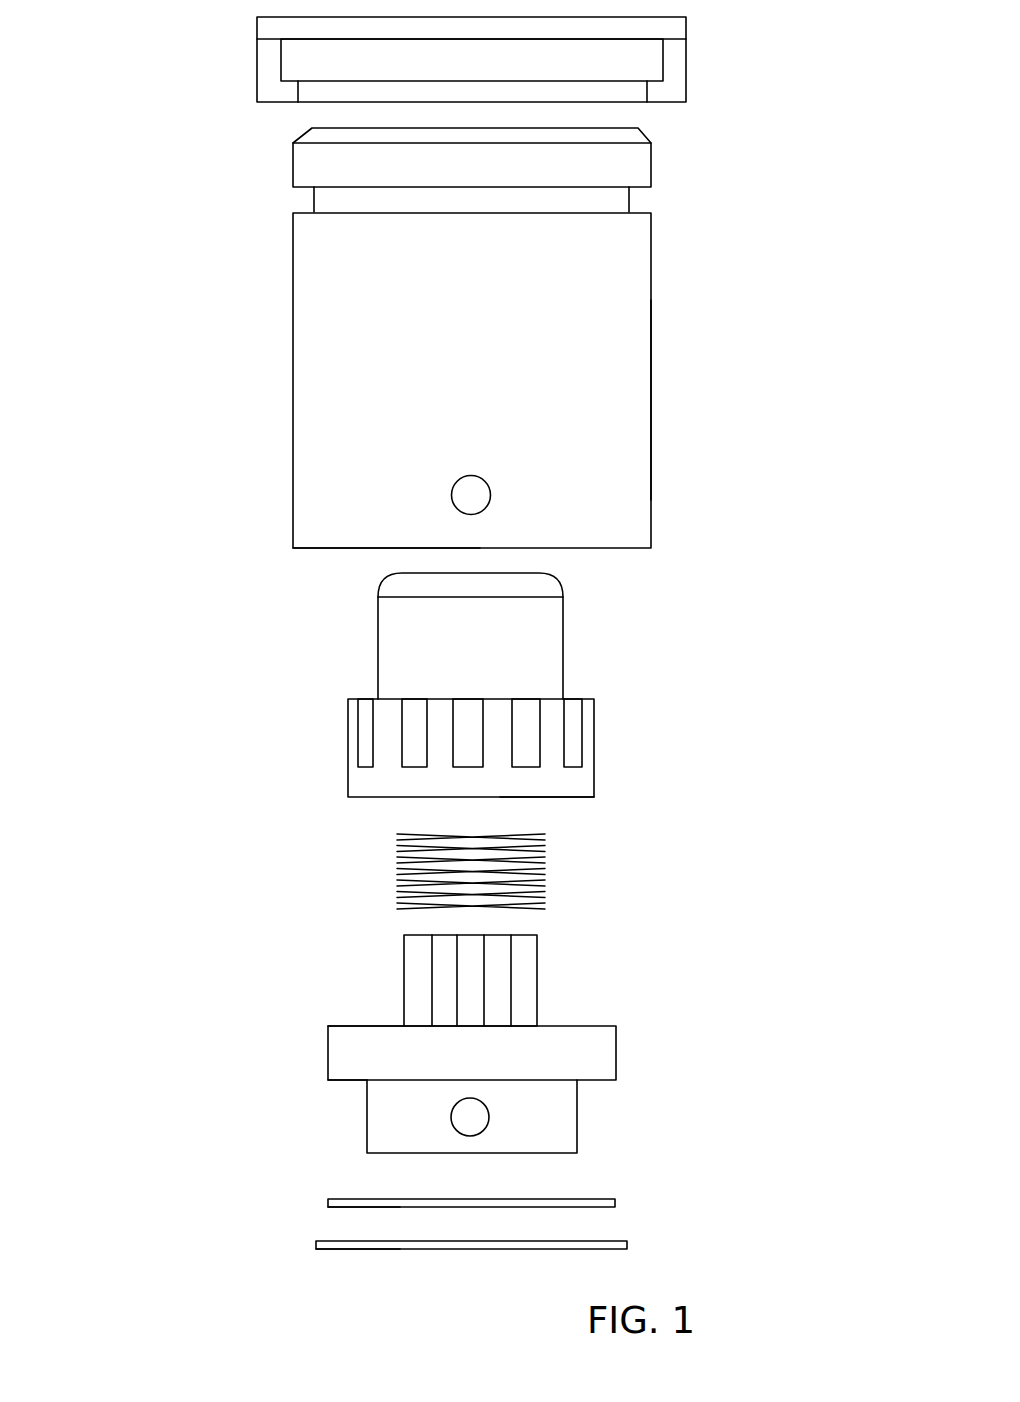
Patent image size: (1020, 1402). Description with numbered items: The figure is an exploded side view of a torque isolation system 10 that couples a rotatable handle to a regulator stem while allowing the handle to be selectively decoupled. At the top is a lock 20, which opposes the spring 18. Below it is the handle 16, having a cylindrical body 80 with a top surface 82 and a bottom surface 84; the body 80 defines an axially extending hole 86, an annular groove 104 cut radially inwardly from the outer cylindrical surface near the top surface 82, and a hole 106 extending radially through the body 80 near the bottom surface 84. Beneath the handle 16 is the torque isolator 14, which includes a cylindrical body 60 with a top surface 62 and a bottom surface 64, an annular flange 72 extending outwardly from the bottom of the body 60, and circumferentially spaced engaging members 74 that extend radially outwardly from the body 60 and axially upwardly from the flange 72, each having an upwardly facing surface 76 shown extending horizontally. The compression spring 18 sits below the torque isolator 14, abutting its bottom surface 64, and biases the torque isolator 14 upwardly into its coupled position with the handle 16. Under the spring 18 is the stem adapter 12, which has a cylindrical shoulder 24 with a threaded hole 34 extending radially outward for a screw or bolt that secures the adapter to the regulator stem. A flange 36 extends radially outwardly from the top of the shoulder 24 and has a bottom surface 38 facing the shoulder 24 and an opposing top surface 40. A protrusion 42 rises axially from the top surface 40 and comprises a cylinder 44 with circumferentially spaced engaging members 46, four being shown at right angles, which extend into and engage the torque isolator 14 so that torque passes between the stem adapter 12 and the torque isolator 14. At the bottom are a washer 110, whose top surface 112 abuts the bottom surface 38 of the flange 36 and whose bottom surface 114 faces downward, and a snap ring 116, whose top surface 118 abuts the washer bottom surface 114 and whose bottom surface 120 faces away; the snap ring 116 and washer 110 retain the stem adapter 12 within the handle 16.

The torque isolation system 10 is at (187, 387).
The stem adapter 12 is at (705, 997).
The torque isolator 14 is at (700, 668).
The handle 16 is at (727, 303).
The spring 18 is at (663, 888).
The lock 20 is at (733, 68).
The cylindrical shoulder 24 is at (558, 1138).
The threaded hole 34 is at (468, 1116).
The flange 36 is at (362, 1055).
The bottom surface 38 is at (352, 1080).
The top surface 40 is at (357, 1027).
The protrusion 42 is at (443, 935).
The cylinder 44 is at (498, 980).
The engaging members 46 is at (527, 945).
The cylindrical body 60 is at (396, 637).
The top surface 62 is at (545, 574).
The bottom surface 64 is at (392, 798).
The annular flange 72 is at (550, 785).
The engaging members 74 is at (585, 738).
The upwardly facing surfaces 76 is at (363, 700).
The cylindrical body 80 is at (316, 272).
The top surface 82 is at (313, 126).
The bottom surface 84 is at (312, 548).
The axially extending hole 86 is at (652, 427).
The annular groove 104 is at (643, 200).
The hole 106 is at (470, 490).
The washer 110 is at (705, 1198).
The top surface 112 is at (593, 1197).
The bottom surface 114 is at (332, 1207).
The snap ring 116 is at (204, 1243).
The top surface 118 is at (317, 1238).
The bottom surface 120 is at (333, 1250).